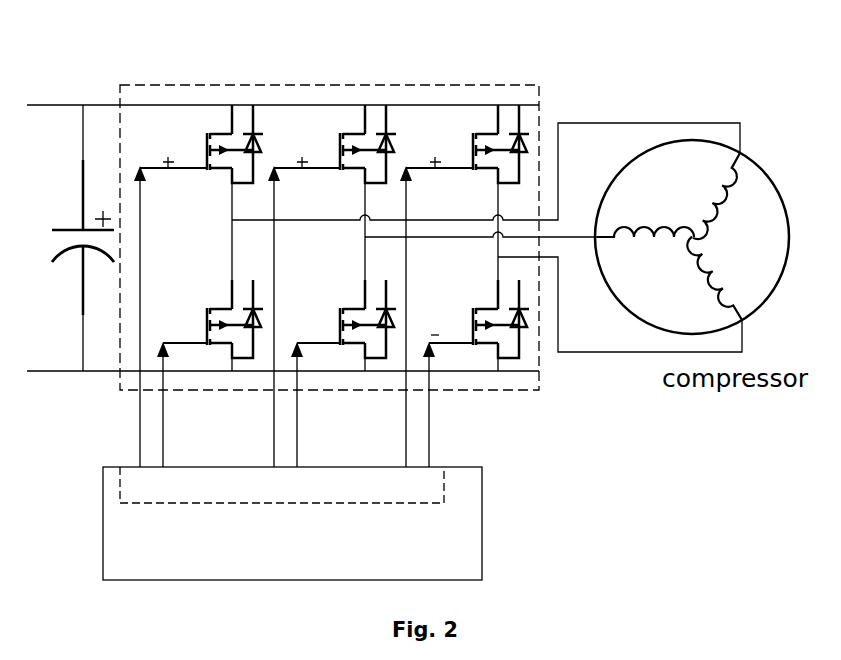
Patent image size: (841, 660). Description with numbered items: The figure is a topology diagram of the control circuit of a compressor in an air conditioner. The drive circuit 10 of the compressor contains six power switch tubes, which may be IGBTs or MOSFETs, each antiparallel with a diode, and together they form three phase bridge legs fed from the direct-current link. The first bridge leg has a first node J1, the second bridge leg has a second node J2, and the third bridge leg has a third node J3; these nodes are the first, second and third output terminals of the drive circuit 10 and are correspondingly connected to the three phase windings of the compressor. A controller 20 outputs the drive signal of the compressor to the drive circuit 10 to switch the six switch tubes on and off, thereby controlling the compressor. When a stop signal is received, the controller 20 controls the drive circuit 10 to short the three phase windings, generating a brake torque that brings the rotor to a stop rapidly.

The drive circuit 10 is at (332, 85).
The controller 20 is at (292, 373).
The first node J1 is at (470, 180).
The second node J2 is at (472, 244).
The third node J3 is at (601, 298).